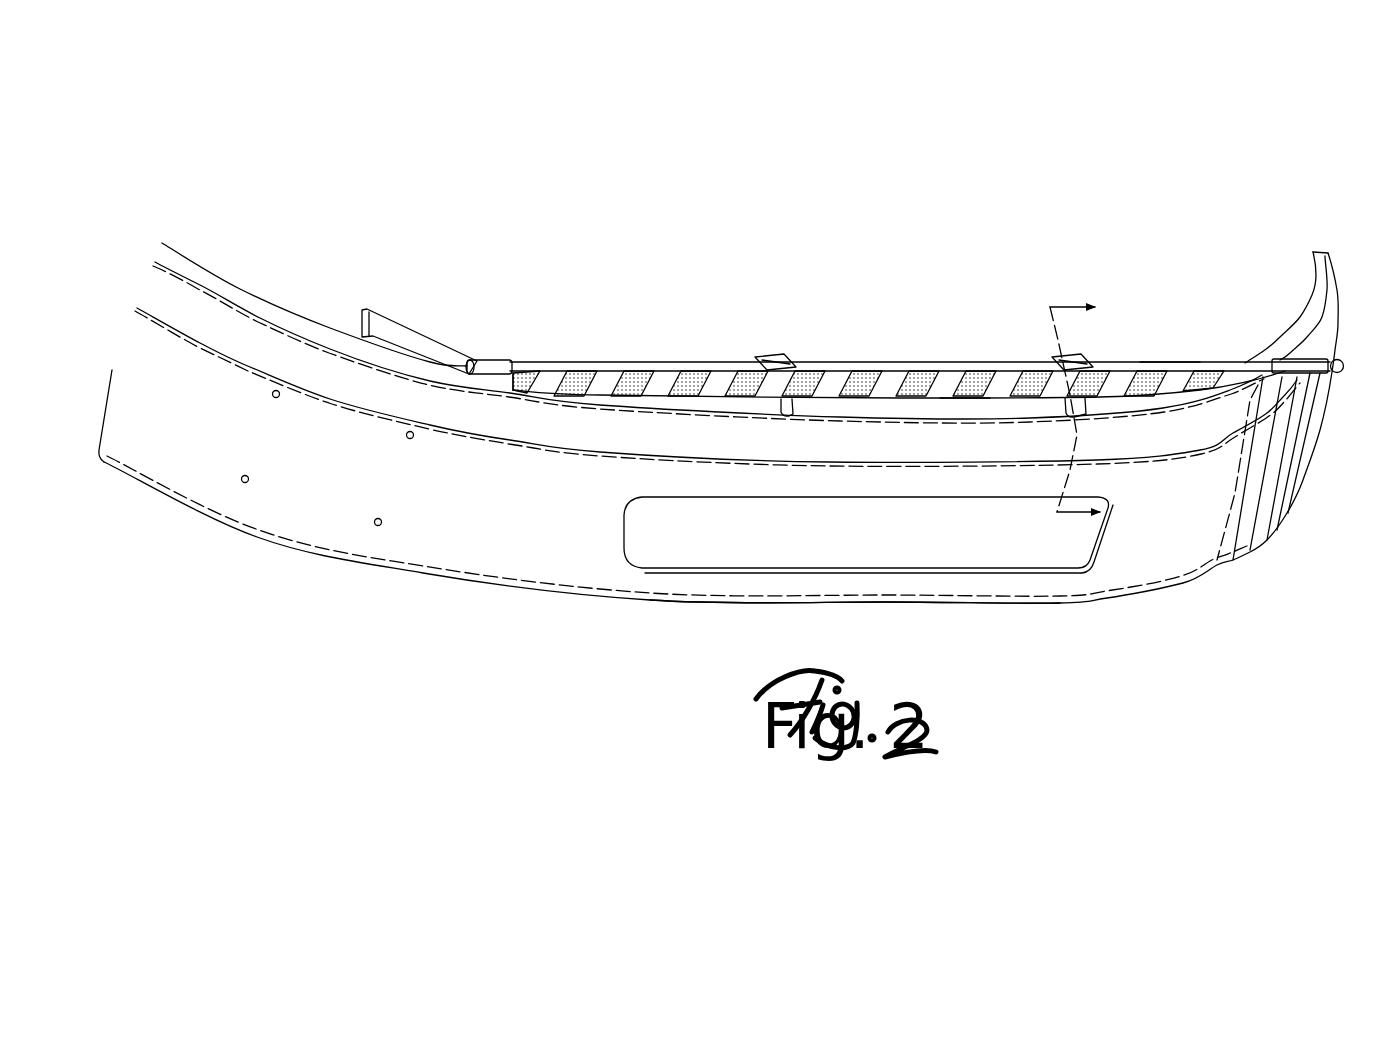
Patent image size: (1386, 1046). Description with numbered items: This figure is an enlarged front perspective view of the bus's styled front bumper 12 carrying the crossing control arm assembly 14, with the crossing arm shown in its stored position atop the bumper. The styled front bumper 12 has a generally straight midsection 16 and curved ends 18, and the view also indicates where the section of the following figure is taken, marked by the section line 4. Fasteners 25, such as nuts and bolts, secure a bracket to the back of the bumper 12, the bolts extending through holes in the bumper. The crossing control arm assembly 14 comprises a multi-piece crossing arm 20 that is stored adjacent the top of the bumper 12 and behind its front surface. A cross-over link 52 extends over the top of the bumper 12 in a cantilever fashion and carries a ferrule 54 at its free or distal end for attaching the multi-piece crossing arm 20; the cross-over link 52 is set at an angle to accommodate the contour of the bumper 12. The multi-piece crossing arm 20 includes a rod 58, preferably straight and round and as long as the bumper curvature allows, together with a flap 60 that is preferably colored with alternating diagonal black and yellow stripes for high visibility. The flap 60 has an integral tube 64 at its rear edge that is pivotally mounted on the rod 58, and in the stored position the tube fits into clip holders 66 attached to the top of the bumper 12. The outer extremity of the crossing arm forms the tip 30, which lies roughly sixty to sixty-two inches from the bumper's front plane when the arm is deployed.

The styled front bumper 12 is at (1112, 600).
The crossing control arm assembly 14 is at (860, 358).
The generally straight midsection 16 is at (879, 592).
The curved ends 18 is at (243, 290).
The multi-piece crossing arm 20 is at (942, 362).
The fasteners 25 is at (272, 394).
The tip 30 is at (1341, 359).
The cross-over link 52 is at (415, 332).
The ferrule 54 is at (497, 362).
The rod 58 is at (1292, 360).
The flap 60 is at (963, 392).
The integral tube 64 is at (1167, 362).
The clip holders 66 is at (763, 356).
The section line 4- 4 is at (1074, 410).